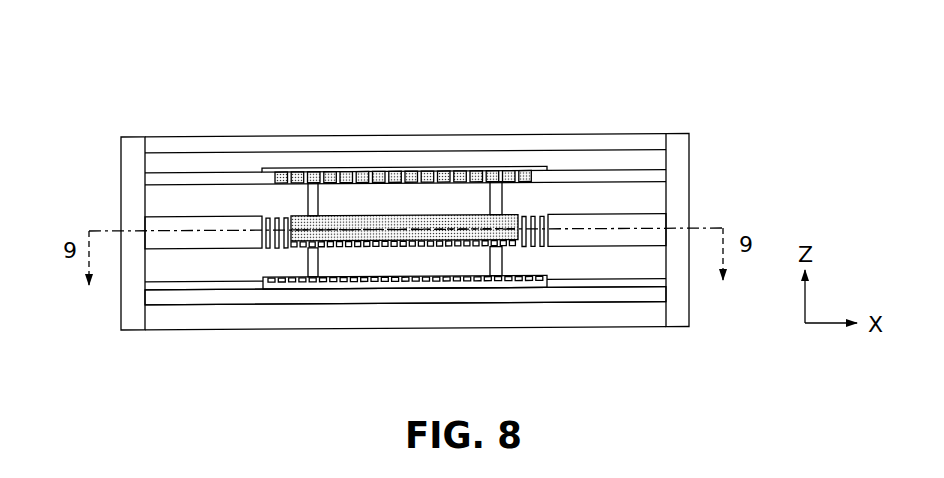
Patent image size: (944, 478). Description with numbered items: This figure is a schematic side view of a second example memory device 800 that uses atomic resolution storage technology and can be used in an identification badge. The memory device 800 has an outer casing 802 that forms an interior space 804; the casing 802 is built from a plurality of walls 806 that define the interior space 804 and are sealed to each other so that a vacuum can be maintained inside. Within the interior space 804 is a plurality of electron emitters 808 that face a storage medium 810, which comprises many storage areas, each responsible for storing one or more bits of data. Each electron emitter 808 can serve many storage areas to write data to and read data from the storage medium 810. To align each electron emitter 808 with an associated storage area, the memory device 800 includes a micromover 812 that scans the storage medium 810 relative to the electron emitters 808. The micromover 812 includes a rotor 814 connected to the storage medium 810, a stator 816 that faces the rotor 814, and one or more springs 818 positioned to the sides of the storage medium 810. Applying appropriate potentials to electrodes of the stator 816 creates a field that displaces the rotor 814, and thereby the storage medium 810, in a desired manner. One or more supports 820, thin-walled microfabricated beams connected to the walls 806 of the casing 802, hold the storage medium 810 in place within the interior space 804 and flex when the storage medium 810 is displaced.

The memory device 800 is at (770, 72).
The outer casing 802 is at (712, 182).
The interior space 804 is at (180, 198).
The walls 806 is at (567, 148).
The electron emitters 808 is at (311, 183).
The storage medium 810 is at (428, 222).
The micromover 812 is at (253, 298).
The rotor 814 is at (378, 249).
The stator 816 is at (352, 290).
The springs 818 is at (268, 212).
The supports 820 is at (318, 195).